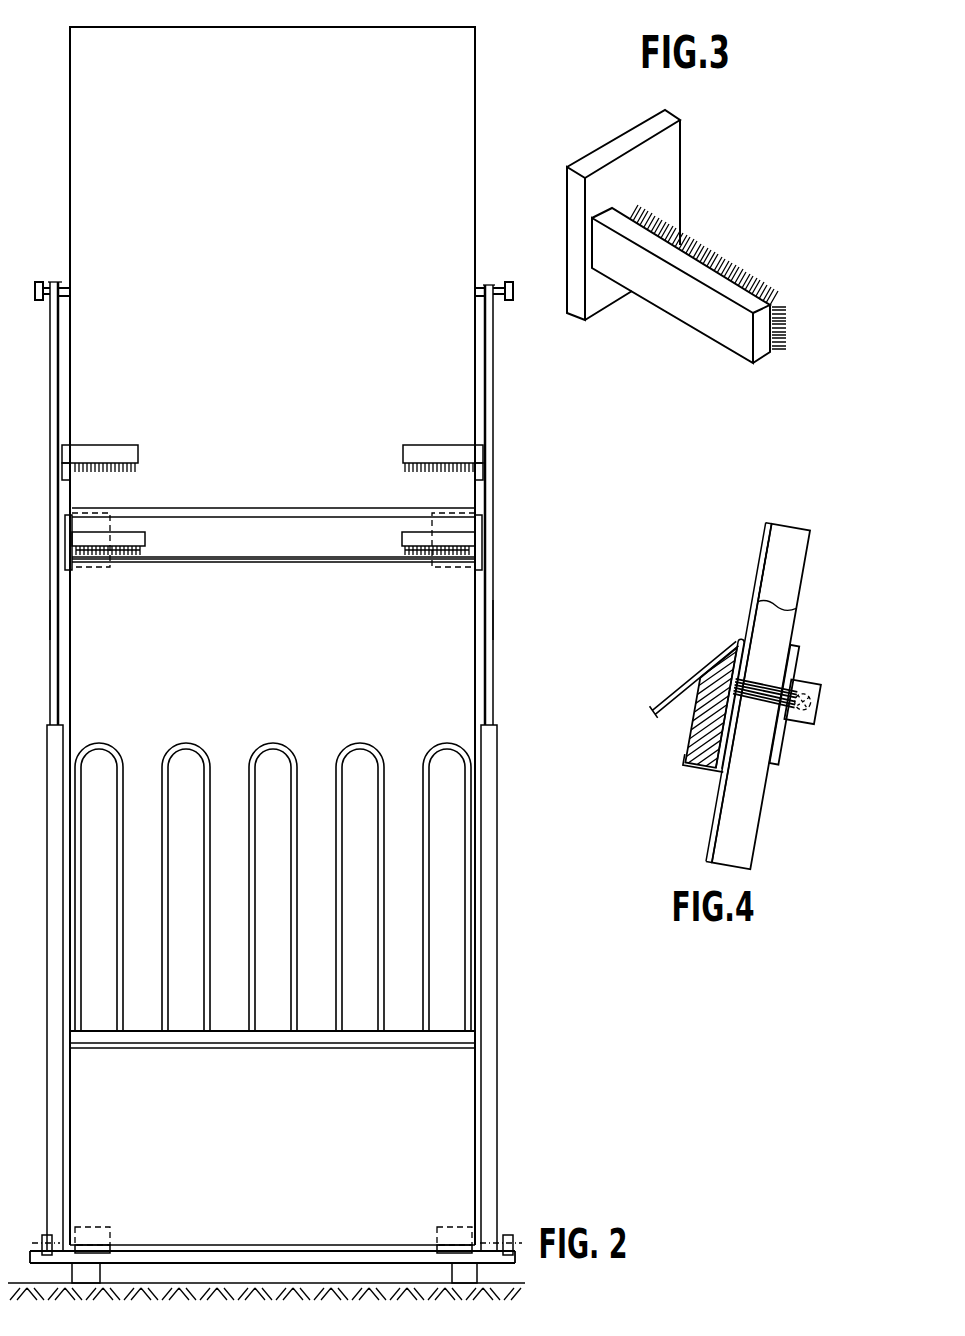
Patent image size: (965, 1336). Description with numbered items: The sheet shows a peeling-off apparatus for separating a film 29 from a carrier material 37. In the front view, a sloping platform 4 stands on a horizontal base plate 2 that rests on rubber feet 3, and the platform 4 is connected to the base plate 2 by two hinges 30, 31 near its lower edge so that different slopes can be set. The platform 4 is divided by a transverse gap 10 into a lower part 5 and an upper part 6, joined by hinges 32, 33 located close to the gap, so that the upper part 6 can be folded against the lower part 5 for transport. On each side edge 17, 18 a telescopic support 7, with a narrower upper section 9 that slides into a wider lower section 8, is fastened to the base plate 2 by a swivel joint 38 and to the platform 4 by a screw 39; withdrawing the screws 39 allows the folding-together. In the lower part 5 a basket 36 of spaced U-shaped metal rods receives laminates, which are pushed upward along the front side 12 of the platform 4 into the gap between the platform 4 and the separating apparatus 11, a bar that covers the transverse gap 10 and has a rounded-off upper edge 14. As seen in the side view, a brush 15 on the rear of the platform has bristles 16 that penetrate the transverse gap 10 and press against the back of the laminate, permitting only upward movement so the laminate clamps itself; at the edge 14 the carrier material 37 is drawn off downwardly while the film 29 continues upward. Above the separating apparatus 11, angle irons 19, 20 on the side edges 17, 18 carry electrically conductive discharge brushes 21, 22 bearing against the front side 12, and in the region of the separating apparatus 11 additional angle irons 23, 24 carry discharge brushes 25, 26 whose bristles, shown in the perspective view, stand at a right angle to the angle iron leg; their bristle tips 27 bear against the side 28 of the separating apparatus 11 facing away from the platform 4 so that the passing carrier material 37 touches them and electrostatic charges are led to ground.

In FIG. 2, the base plate 2 is at (276, 1258).
In FIG. 2, the feet 3 is at (90, 1275).
In FIG. 2, the sloping platform 4 is at (480, 76).
In FIG. 2, the lower part of the platform 5 is at (60, 648).
In FIG. 4, the lower part of the platform 5 is at (750, 830).
In FIG. 2, the upper part of the platform 6 is at (70, 80).
In FIG. 4, the upper part of the platform 6 is at (790, 583).
In FIG. 2, the support 7 is at (45, 696).
In FIG. 2, the lower section of the support 8 is at (50, 775).
In FIG. 2, the upper section of the support 9 is at (50, 620).
In FIG. 4, the transverse gap 10 is at (767, 705).
In FIG. 2, the separating apparatus 11 is at (272, 504).
In FIG. 4, the separating apparatus 11 is at (697, 765).
In FIG. 2, the front side of the platform 12 is at (90, 152).
In FIG. 4, the front side of the platform 12 is at (795, 608).
In FIG. 4, the rounded-off upper edge 14 is at (735, 636).
In FIG. 4, the brush 15 is at (819, 700).
In FIG. 4, the bristles 16 is at (762, 682).
In FIG. 2, the side edge of the platform 17 is at (70, 212).
In FIG. 2, the side edge of the platform 18 is at (476, 208).
In FIG. 2, the angle iron 19 is at (62, 455).
In FIG. 2, the angle iron 20 is at (484, 470).
In FIG. 2, the discharge brush 21 is at (116, 450).
In FIG. 2, the discharge brush 22 is at (420, 450).
In FIG. 2, the angle iron 23 is at (72, 545).
In FIG. 3, the angle iron 23 is at (600, 157).
In FIG. 2, the angle iron 24 is at (482, 545).
In FIG. 2, the discharge brush 25 is at (135, 538).
In FIG. 3, the discharge brush 25 is at (685, 305).
In FIG. 2, the discharge brush 26 is at (408, 538).
In FIG. 2, the bristle tips 27 is at (128, 552).
In FIG. 3, the bristle tips 27 is at (757, 278).
In FIG. 2, the side of the separating apparatus 28 is at (297, 548).
In FIG. 4, the side of the separating apparatus 28 is at (689, 742).
In FIG. 4, the film 29 is at (762, 552).
In FIG. 2, the hinge 30 is at (100, 1245).
In FIG. 2, the hinge 31 is at (455, 1245).
In FIG. 2, the hinge 32 is at (112, 508).
In FIG. 4, the hinge 32 is at (808, 687).
In FIG. 2, the hinge 33 is at (428, 508).
In FIG. 2, the basket 36 is at (360, 772).
In FIG. 4, the carrier material 37 is at (674, 688).
In FIG. 2, the swivel joint 38 is at (45, 1233).
In FIG. 2, the screw 39 is at (38, 280).